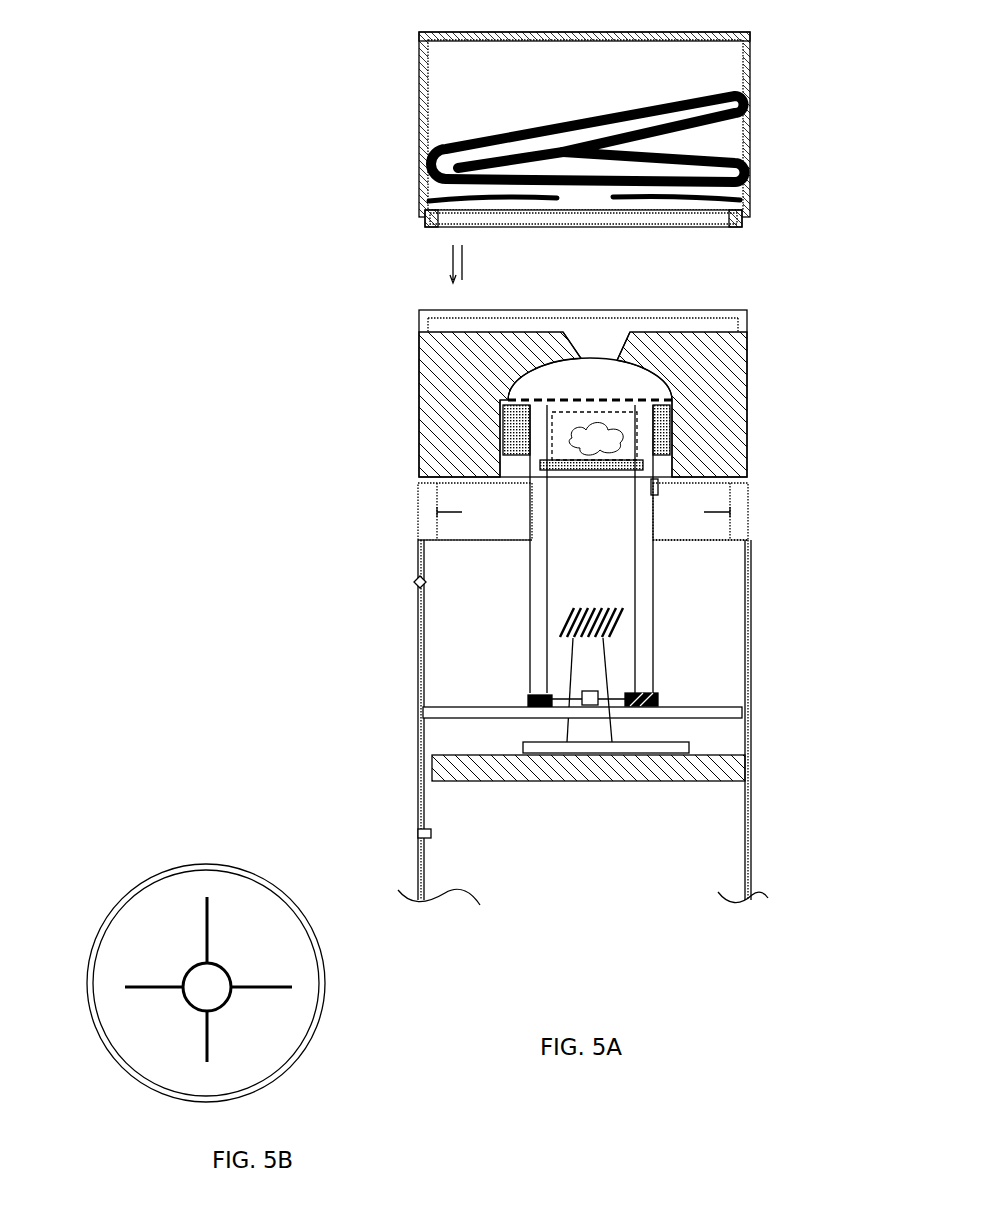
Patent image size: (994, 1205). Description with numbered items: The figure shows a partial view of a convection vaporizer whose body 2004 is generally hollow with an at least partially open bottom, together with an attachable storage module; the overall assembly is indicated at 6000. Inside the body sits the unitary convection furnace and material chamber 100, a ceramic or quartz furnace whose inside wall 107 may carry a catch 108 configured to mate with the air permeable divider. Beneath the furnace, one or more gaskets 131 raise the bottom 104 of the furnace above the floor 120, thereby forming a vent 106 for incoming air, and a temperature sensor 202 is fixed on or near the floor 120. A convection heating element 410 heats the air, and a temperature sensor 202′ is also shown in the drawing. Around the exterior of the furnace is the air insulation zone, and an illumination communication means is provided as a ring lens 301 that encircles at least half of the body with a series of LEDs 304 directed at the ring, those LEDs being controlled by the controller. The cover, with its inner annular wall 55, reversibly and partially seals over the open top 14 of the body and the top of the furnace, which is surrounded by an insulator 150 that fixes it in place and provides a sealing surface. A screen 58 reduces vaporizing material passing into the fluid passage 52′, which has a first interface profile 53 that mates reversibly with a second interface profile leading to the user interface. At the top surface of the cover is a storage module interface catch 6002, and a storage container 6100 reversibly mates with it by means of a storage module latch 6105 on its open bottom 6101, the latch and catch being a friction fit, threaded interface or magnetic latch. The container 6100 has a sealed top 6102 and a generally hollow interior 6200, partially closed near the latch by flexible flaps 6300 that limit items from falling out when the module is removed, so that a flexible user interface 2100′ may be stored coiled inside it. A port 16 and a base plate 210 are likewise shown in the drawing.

In FIG. 5A, the storage container 6100 is at (398, 96).
In FIG. 5B, the storage container 6100 is at (96, 916).
In FIG. 5A, the sealed top 6102 is at (452, 20).
In FIG. 5A, the hollow interior 6200 is at (518, 107).
In FIG. 5A, the flexible user interface 2100′ is at (550, 128).
In FIG. 5A, the flexible flaps 6300 is at (434, 187).
In FIG. 5B, the flexible flaps 6300 is at (181, 942).
In FIG. 5A, the storage module latch 6105 is at (428, 222).
In FIG. 5A, the open bottom 6101 is at (699, 247).
In FIG. 5A, the storage module interface catch 6002 is at (801, 303).
In FIG. 5A, the fluid passage 52′ is at (612, 344).
In FIG. 5A, the first interface profile 53 is at (576, 356).
In FIG. 5A, the screen 58 is at (621, 398).
In FIG. 5A, the open top 14 is at (490, 397).
In FIG. 5A, the insulator 150 is at (700, 448).
In FIG. 5A, the inner annular wall 55 is at (490, 465).
In FIG. 5A, the unitary convection furnace and material chamber 100 is at (530, 548).
In FIG. 5A, the inside wall 107 is at (555, 541).
In FIG. 5A, the catch 108 is at (522, 470).
In FIG. 5A, the ring lens 301 is at (417, 513).
In FIG. 5A, the LEDs 304 is at (584, 514).
In FIG. 5A, the sensor 202′ is at (658, 496).
In FIG. 5A, the body 2004 is at (390, 694).
In FIG. 5A, the port 16 is at (414, 580).
In FIG. 5A, the convection heating element 410 is at (618, 602).
In FIG. 5A, the gaskets 131 is at (527, 699).
In FIG. 5A, the bottom 104 is at (658, 697).
In FIG. 5A, the vent 106 is at (567, 704).
In FIG. 5A, the floor 120 is at (708, 712).
In FIG. 5A, the base plate 210 is at (689, 747).
In FIG. 5A, the temperature sensor 202 is at (612, 742).
In FIG. 5A, the system 6000 is at (842, 55).